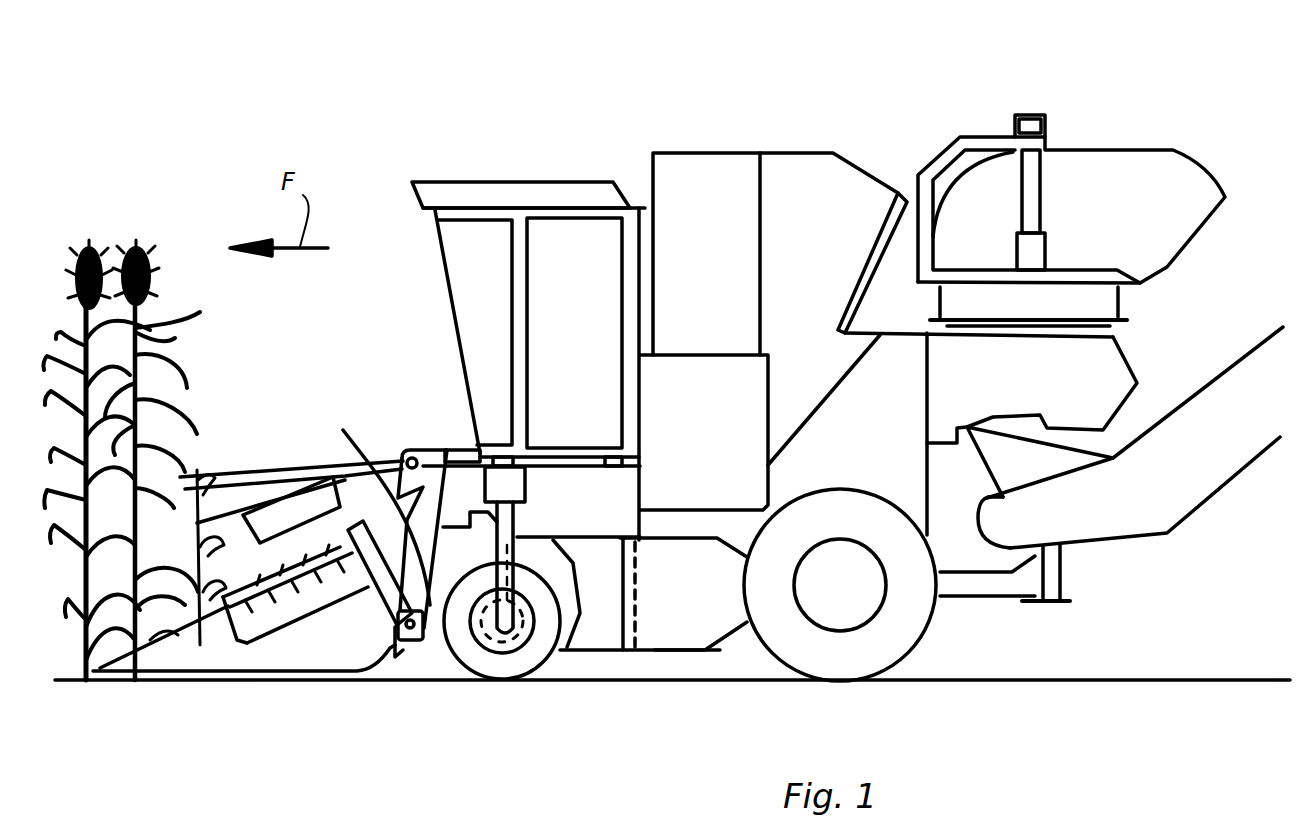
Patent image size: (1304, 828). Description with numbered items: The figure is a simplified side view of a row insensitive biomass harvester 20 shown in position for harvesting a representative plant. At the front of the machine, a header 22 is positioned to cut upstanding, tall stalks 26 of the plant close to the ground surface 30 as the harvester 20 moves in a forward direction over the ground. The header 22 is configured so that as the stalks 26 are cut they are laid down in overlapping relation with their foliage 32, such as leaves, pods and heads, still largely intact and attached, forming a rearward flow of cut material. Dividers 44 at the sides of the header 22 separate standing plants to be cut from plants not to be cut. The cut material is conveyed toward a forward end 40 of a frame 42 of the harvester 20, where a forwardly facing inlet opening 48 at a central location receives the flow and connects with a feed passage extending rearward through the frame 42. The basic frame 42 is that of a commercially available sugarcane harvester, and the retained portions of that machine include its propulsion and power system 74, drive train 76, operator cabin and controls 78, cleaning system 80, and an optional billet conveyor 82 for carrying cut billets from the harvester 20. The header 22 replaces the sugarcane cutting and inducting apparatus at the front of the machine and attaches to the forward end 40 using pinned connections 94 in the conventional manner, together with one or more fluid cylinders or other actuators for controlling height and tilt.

The harvester 20 is at (897, 117).
The header 22 is at (270, 568).
The stalks 26 is at (162, 460).
The ground surface 30 is at (1200, 676).
The foliage 32 is at (170, 330).
The forward end 40 is at (437, 640).
The frame 42 is at (598, 652).
The dividers 44 is at (209, 670).
The inlet opening 48 is at (398, 462).
The propulsion and power system 74 is at (745, 152).
The drive train 76 is at (932, 632).
The operator cabin and controls 78 is at (521, 184).
The cleaning system 80 is at (1177, 154).
The billet conveyor 82 is at (1245, 470).
The pinned connections 94 is at (412, 456).